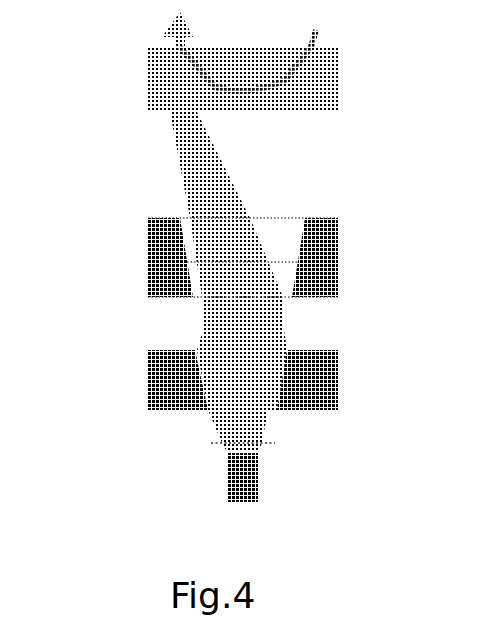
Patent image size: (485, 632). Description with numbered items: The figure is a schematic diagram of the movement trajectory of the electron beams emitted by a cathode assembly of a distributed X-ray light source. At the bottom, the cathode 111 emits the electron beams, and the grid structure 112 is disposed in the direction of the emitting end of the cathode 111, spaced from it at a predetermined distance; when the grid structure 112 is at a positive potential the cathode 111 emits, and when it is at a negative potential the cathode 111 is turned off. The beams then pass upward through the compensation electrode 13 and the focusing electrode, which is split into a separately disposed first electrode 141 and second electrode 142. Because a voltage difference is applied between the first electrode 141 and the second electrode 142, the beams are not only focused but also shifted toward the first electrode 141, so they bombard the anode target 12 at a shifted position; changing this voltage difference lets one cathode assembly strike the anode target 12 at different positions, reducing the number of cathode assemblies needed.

The anode target 12 is at (338, 84).
The first electrode 141 is at (148, 254).
The second electrode 142 is at (338, 259).
The compensation electrode 13 is at (337, 384).
The grid structure 112 is at (213, 443).
The cathode 111 is at (258, 487).